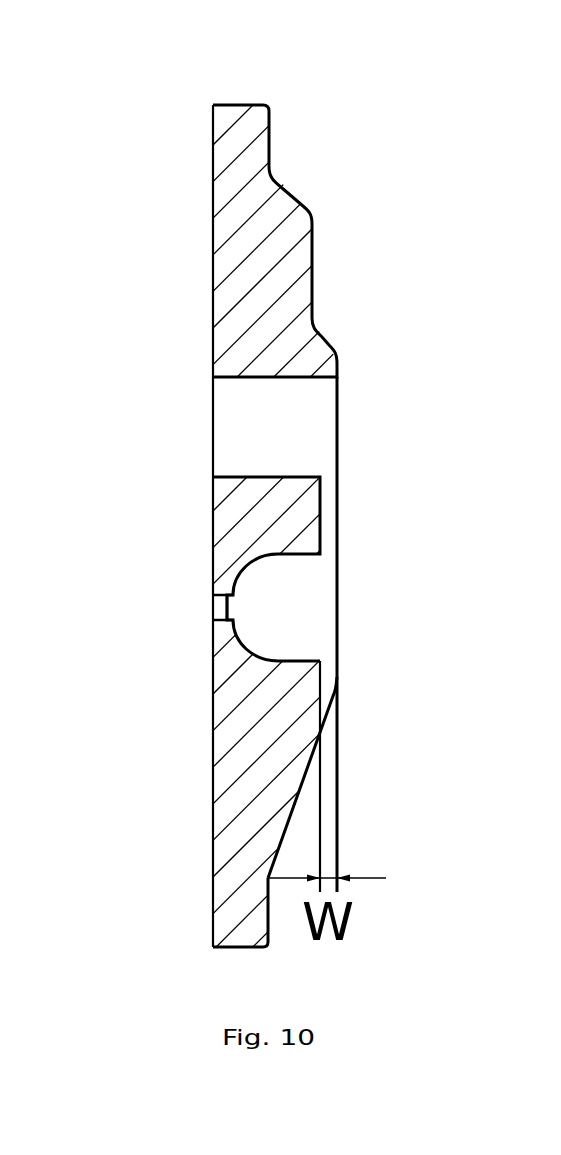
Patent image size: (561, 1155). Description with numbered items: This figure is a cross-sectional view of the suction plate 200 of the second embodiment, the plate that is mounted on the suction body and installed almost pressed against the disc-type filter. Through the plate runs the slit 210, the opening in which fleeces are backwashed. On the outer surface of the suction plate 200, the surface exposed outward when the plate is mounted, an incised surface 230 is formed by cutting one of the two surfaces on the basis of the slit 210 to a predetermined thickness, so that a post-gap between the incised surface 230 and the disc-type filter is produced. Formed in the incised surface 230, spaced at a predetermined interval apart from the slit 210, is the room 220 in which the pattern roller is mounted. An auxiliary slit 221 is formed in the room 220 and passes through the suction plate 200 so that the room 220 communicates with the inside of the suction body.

The suction plate 200 is at (249, 136).
The slit 210 is at (256, 441).
The room 220 is at (293, 621).
The auxiliary slit 221 is at (222, 608).
The incised surface 230 is at (322, 681).